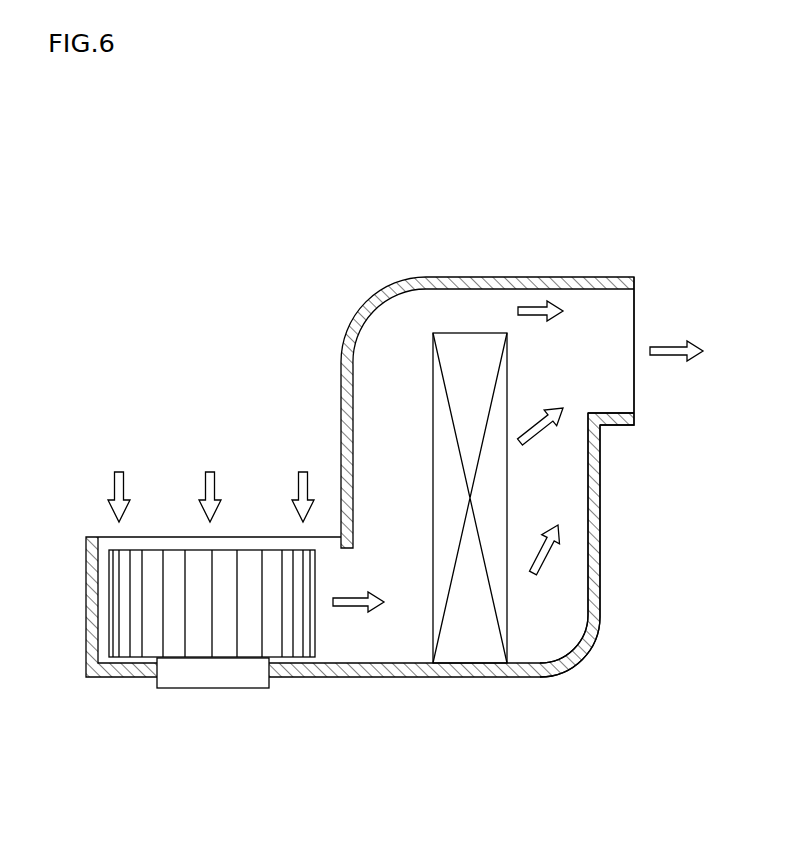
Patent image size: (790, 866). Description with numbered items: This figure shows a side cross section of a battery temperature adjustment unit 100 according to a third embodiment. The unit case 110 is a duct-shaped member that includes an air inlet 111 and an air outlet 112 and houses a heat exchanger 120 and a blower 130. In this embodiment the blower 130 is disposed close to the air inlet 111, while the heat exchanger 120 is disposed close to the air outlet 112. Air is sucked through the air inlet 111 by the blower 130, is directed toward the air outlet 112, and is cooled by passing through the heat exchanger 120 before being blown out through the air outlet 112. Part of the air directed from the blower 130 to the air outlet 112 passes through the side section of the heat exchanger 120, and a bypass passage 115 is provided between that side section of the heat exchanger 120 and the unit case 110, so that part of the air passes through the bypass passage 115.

The battery temperature adjustment unit 100 is at (543, 277).
The unit case 110 is at (601, 536).
The air inlet 111 is at (172, 537).
The air outlet 112 is at (637, 316).
The bypass passage 115 is at (495, 323).
The heat exchanger 120 is at (432, 460).
The blower 130 is at (317, 633).